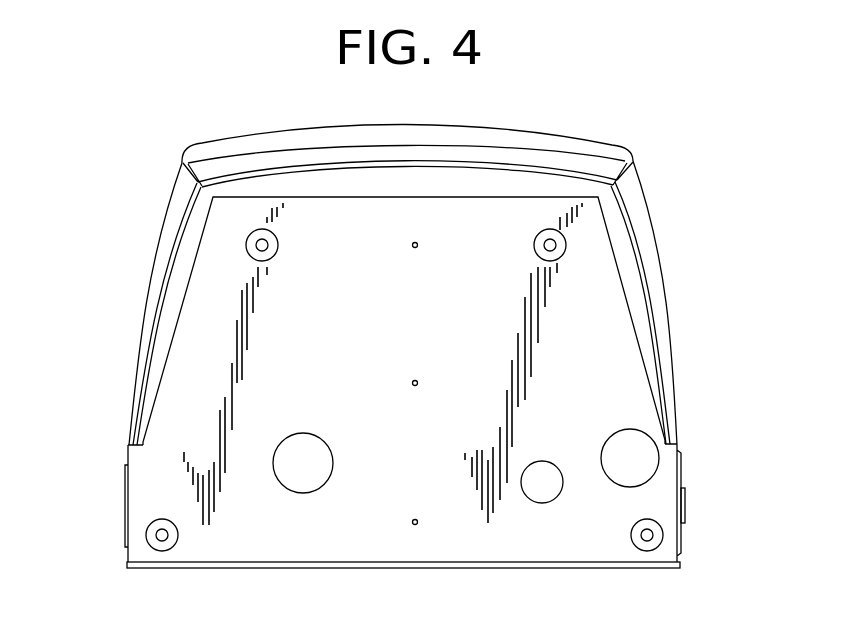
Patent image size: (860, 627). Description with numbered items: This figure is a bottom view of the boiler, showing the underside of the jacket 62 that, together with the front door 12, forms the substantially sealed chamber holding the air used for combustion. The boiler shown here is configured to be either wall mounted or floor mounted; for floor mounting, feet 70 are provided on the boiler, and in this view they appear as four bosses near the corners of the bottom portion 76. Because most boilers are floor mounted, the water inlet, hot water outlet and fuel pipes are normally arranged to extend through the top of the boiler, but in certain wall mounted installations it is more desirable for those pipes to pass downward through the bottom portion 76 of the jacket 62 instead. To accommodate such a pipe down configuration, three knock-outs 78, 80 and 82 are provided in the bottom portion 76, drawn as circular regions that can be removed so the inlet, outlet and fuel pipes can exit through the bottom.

The front door 12 is at (634, 191).
The jacket 62 is at (680, 557).
The feet 70 is at (246, 245).
The bottom portion 76 is at (612, 348).
The knock-out 78 is at (635, 444).
The knock-out 80 is at (547, 495).
The knock-out 82 is at (302, 485).